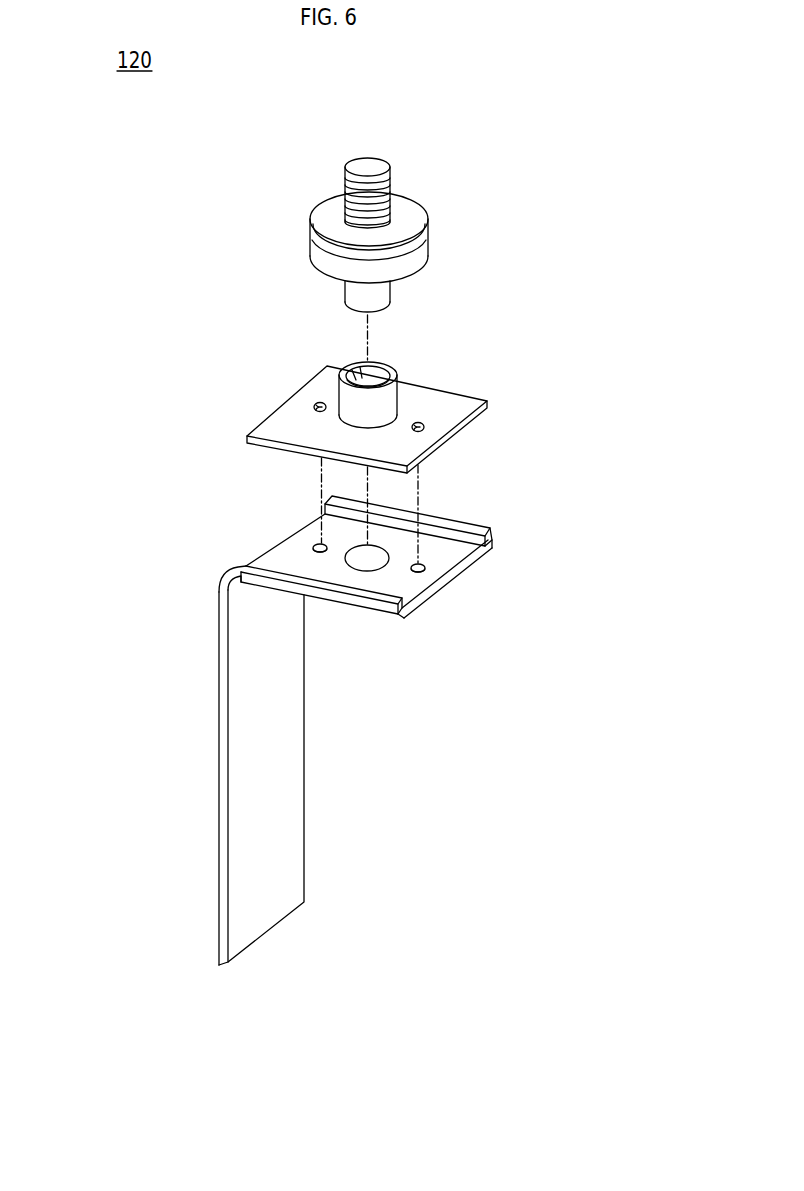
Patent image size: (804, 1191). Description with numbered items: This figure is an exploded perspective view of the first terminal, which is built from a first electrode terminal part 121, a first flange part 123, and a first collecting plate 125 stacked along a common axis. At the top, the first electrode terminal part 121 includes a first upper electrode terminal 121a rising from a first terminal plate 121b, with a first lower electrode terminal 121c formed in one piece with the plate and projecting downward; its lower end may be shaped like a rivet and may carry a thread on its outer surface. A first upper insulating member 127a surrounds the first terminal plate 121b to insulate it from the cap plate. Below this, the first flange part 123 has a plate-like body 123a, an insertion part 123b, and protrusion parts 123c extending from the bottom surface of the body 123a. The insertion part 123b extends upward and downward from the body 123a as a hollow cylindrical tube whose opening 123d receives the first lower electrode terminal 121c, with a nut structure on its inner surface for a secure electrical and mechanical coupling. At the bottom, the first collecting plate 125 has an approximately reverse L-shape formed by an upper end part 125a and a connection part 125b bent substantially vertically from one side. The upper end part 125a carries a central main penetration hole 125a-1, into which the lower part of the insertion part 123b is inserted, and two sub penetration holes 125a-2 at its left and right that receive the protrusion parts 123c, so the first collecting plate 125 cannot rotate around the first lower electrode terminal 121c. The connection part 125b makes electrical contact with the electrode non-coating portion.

The first electrode terminal part 121 is at (268, 156).
The first upper electrode terminal 121a is at (367, 160).
The first terminal plate 121b is at (407, 217).
The first upper insulating member 127a is at (421, 252).
The first lower electrode terminal 121c is at (348, 293).
The first flange part 123 is at (220, 307).
The body 123a is at (443, 400).
The insertion part 123b is at (400, 398).
The protrusion part 123c is at (312, 407).
The opening 123d is at (352, 368).
The first collecting plate 125 is at (152, 541).
The upper end part 125a is at (447, 562).
The main penetration hole 125a-1 is at (373, 558).
The sub penetration hole 125a-2 is at (318, 545).
The connection part 125b is at (280, 757).